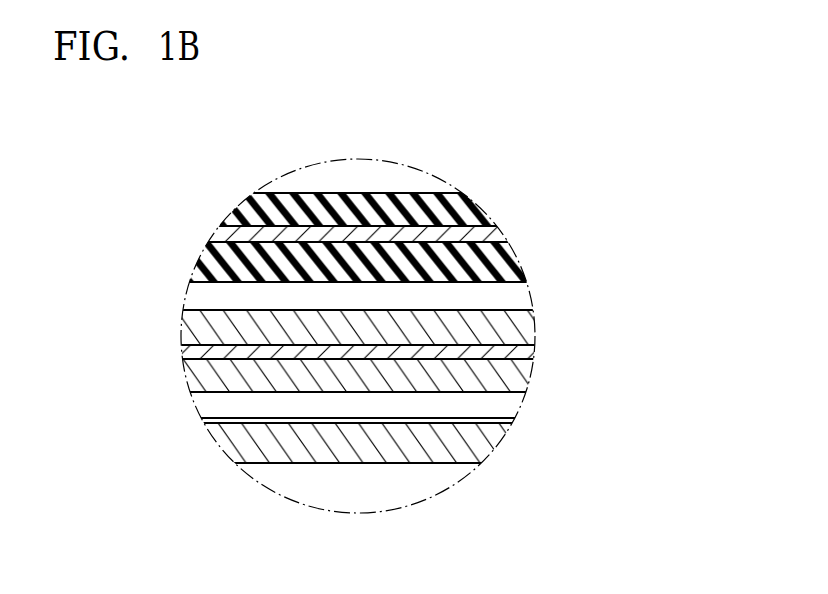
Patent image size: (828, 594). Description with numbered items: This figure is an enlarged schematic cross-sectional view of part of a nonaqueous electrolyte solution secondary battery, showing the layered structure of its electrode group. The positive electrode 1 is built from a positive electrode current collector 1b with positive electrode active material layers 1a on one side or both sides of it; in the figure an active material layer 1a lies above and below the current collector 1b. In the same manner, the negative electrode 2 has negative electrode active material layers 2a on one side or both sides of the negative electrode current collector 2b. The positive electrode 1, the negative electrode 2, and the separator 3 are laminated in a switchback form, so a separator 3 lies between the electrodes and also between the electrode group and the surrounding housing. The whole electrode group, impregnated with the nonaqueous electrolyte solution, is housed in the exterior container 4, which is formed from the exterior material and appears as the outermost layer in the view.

The positive electrode 1 is at (402, 233).
The positive electrode active material layer 1a is at (465, 212).
The positive electrode current collector 1b is at (490, 238).
The negative electrode 2 is at (407, 364).
The negative electrode active material layer 2a is at (515, 328).
The negative electrode current collector 2b is at (520, 352).
The separator 3 is at (300, 186).
The exterior container 4 is at (481, 446).